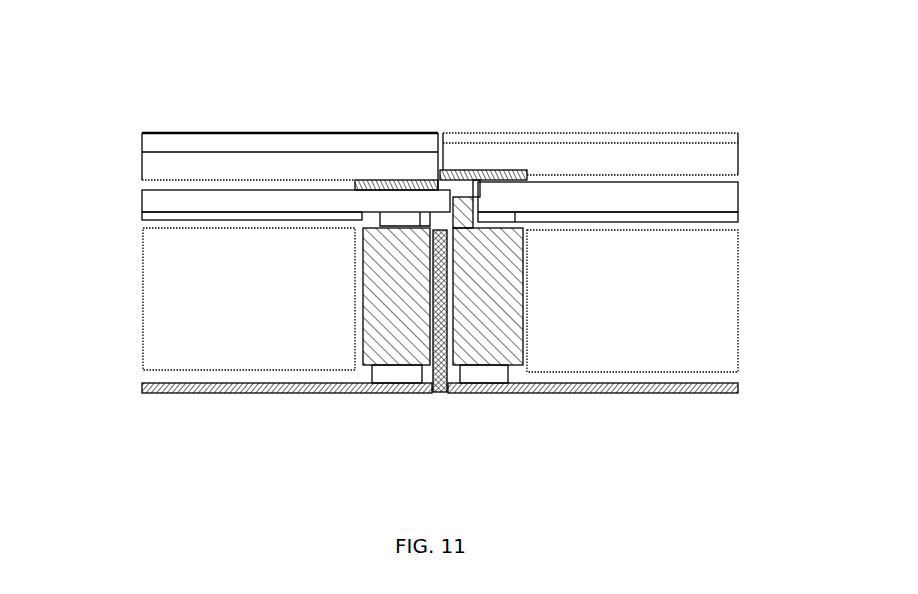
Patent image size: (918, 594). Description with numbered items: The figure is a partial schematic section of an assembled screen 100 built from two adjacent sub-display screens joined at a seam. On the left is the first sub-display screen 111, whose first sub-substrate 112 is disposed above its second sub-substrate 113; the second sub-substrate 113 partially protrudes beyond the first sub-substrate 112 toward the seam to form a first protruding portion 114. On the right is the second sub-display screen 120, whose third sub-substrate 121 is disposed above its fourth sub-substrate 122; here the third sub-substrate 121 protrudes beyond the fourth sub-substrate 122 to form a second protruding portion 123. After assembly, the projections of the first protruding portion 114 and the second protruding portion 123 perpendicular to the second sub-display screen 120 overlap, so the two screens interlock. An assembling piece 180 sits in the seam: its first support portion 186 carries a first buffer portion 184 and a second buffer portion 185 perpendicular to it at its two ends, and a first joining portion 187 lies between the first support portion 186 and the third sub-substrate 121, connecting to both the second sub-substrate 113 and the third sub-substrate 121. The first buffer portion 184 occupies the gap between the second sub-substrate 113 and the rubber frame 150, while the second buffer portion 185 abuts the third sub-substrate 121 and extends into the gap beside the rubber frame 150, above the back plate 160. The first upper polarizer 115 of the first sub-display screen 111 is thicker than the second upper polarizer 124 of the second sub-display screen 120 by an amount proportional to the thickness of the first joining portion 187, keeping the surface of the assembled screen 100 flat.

The assembled screen 100 is at (147, 62).
The first sub-display screen 111 is at (135, 135).
The first sub-substrate 112 is at (195, 163).
The second sub-substrate 113 is at (260, 205).
The first protruding portion 114 is at (450, 207).
The first upper polarizer 115 is at (302, 147).
The second sub-display screen 120 is at (760, 133).
The third sub-substrate 121 is at (690, 157).
The fourth sub-substrate 122 is at (590, 205).
The second protruding portion 123 is at (472, 366).
The second upper polarizer 124 is at (628, 133).
The rubber frame 150 is at (385, 308).
The back plate 160 is at (347, 393).
The assembling piece 180 is at (512, 73).
The first buffer portion 184 is at (448, 205).
The second buffer portion 185 is at (477, 182).
The first support portion 186 is at (452, 168).
The first joining portion 187 is at (445, 185).